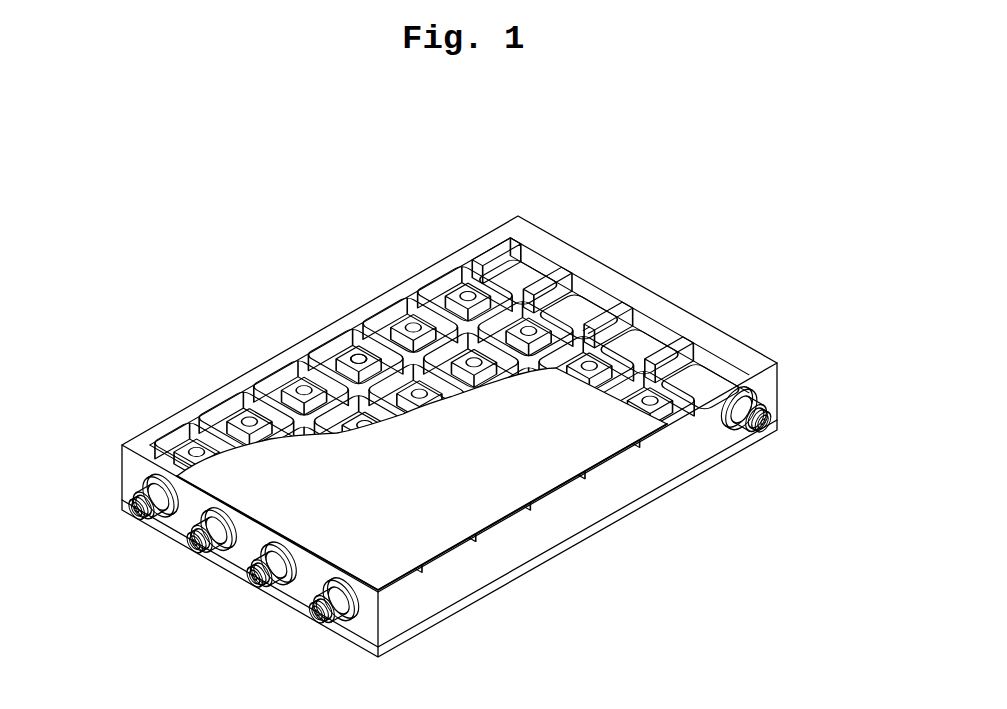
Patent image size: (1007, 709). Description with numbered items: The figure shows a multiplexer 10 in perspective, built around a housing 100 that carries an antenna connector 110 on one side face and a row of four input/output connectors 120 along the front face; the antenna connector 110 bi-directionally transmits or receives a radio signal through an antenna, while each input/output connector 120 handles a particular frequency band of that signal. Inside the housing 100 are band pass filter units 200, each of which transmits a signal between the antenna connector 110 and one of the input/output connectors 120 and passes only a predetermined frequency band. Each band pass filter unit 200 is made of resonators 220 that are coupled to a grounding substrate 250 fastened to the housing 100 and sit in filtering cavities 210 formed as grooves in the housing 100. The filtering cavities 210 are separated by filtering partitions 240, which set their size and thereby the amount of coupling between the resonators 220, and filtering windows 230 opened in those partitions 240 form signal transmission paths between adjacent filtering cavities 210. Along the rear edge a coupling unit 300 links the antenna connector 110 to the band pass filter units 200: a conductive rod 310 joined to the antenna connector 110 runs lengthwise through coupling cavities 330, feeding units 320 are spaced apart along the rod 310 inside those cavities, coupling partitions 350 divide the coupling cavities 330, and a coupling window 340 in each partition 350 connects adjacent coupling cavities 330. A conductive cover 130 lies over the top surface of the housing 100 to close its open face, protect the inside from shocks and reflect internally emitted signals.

The device 10 is at (156, 162).
The housing 100 is at (710, 440).
The antenna connector 110 is at (763, 408).
The input/output connectors 120 is at (132, 522).
The cover 130 is at (545, 475).
The band pass filter unit 200 is at (314, 245).
The filtering cavities 210 is at (333, 343).
The resonators 220 is at (340, 358).
The filtering windows 230 is at (436, 306).
The filtering partitions 240 is at (375, 333).
The substrate 250 is at (510, 575).
The coupling unit 300 is at (690, 142).
The conductive rod 310 is at (558, 290).
The feeding units 320 is at (520, 268).
The coupling cavities 330 is at (597, 290).
The coupling window 340 is at (620, 318).
The coupling partitions 350 is at (688, 340).